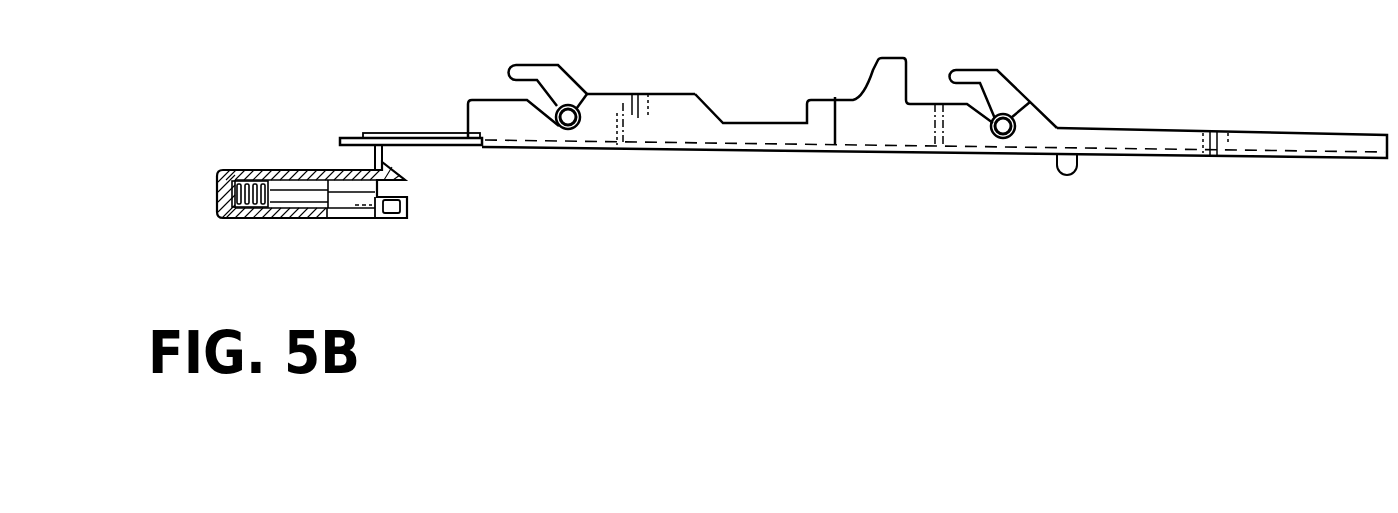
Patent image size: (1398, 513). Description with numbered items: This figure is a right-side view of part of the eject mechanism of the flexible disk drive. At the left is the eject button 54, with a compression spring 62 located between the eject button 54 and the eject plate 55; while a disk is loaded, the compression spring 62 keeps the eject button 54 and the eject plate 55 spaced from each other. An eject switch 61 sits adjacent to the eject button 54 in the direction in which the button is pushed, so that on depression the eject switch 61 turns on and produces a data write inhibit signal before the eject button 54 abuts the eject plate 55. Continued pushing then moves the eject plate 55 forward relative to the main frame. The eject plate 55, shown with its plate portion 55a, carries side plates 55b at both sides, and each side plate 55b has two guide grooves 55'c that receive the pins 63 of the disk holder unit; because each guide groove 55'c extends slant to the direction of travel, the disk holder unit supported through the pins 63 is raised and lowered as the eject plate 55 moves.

The eject button 54 is at (270, 218).
The eject plate 55 is at (927, 142).
The plate portion 55a is at (855, 72).
The side plate 55b is at (717, 130).
The guide groove 55'c is at (789, 74).
The eject switch 61 is at (396, 218).
The compression spring 62 is at (245, 178).
The pin 63 is at (560, 130).